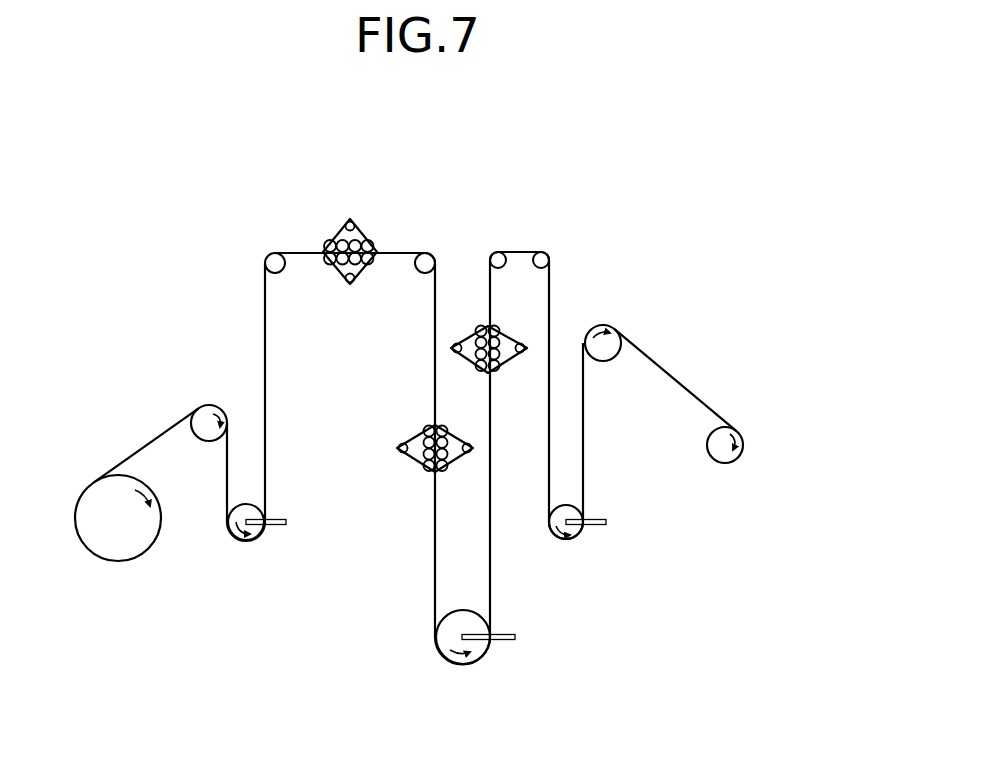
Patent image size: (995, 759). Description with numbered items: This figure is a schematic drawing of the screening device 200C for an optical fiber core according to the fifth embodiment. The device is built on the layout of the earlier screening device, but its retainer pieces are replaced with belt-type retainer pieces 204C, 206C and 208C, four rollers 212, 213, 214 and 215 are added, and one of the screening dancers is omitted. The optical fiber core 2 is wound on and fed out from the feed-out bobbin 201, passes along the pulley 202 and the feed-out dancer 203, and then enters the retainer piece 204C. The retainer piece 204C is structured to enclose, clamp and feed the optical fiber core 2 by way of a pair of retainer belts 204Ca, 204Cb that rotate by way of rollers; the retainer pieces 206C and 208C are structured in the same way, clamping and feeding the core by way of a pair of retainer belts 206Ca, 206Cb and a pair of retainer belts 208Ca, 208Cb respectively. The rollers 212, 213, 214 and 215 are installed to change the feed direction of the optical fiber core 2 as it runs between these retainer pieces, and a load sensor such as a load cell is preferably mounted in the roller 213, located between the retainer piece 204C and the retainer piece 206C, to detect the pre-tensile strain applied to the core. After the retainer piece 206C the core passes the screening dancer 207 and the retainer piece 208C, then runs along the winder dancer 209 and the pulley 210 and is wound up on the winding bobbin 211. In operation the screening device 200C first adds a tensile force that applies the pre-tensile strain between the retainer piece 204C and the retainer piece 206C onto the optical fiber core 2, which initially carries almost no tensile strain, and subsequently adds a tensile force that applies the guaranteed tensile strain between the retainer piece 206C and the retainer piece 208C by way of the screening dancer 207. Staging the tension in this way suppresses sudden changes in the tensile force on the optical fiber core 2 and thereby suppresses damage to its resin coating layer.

The optical fiber core 2 is at (152, 440).
The screening device 200C is at (698, 145).
The feed-out bobbin 201 is at (117, 561).
The pulley 202 is at (210, 406).
The feed-out dancer 203 is at (240, 541).
The retainer piece 204C is at (365, 232).
The retainer belt 204Ca is at (334, 274).
The retainer belt 204Cb is at (336, 232).
The retainer piece 206C is at (488, 457).
The retainer belt 206Ca is at (457, 465).
The retainer belt 206Cb is at (413, 465).
The screening dancer 207 is at (461, 665).
The retainer piece 208C is at (504, 322).
The retainer belt 208Ca is at (508, 361).
The retainer belt 208Cb is at (467, 365).
The winder dancer 209 is at (565, 540).
The pulley 210 is at (617, 329).
The winding bobbin 211 is at (725, 463).
The roller 212 is at (278, 273).
The roller 213 is at (423, 273).
The roller 214 is at (499, 268).
The roller 215 is at (545, 268).